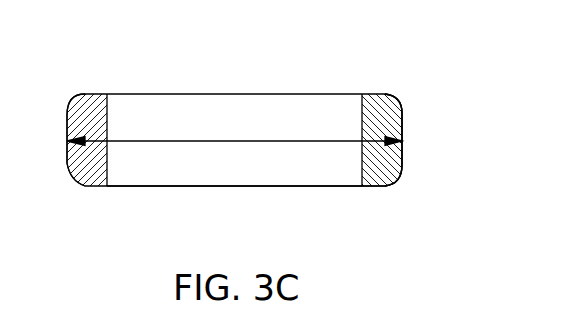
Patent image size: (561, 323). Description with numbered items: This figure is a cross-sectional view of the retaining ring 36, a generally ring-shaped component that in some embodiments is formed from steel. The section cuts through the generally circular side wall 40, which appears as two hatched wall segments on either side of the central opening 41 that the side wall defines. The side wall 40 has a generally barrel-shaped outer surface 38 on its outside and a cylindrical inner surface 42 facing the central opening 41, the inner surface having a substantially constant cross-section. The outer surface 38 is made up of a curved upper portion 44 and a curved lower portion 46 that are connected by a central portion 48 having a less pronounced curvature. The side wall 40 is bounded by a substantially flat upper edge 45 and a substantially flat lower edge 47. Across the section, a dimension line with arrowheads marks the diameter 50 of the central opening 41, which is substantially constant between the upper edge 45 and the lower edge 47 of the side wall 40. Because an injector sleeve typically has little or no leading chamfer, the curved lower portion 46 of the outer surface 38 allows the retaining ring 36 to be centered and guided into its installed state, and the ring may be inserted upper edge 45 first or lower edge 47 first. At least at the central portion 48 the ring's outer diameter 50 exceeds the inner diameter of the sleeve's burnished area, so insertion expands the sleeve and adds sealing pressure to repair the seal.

The retaining ring 36 is at (445, 107).
The outer surface 38 is at (68, 119).
The side wall 40 is at (418, 97).
The central opening 41 is at (205, 176).
The inner surface 42 is at (108, 127).
The curved upper portion 44 is at (385, 94).
The upper edge 45 is at (364, 94).
The curved lower portion 46 is at (396, 177).
The lower edge 47 is at (371, 188).
The central portion 48 is at (403, 149).
The diameter 50 is at (257, 141).